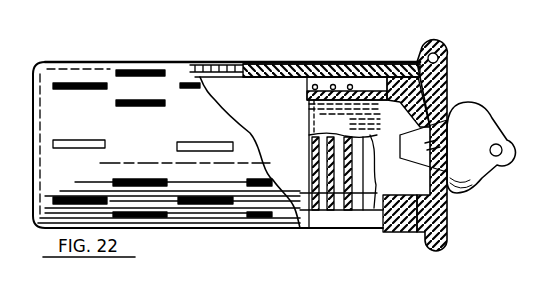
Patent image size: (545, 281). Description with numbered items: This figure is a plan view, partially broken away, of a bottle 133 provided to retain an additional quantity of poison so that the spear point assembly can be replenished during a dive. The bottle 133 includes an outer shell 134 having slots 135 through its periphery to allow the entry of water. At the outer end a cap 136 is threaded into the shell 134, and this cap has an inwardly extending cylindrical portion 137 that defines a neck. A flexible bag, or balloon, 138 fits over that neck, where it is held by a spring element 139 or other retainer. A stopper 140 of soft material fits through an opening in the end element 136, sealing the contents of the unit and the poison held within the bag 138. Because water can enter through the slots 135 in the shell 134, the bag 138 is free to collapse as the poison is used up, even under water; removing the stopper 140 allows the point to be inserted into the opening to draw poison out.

The bottle 133 is at (313, 58).
The outer shell 134 is at (297, 228).
The slots 135 is at (204, 66).
The cap 136 is at (430, 90).
The cylindrical portion 137 is at (310, 97).
The flexible bag 138 is at (282, 155).
The spring element 139 is at (347, 207).
The stopper 140 is at (465, 118).